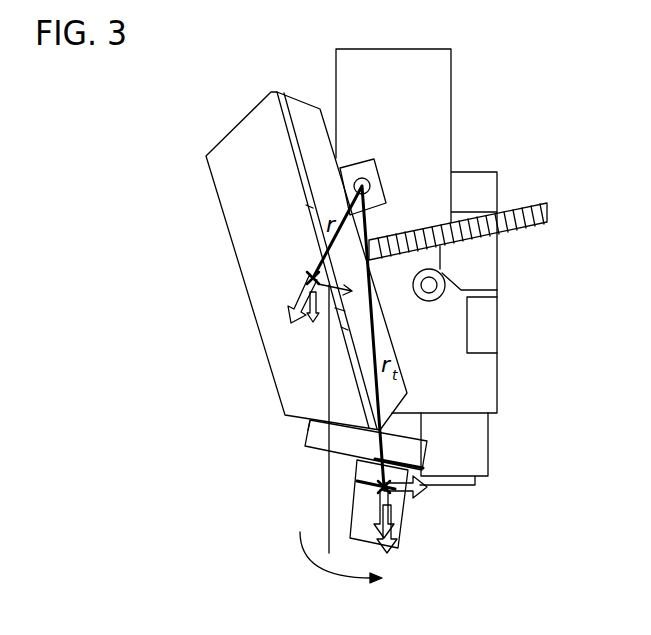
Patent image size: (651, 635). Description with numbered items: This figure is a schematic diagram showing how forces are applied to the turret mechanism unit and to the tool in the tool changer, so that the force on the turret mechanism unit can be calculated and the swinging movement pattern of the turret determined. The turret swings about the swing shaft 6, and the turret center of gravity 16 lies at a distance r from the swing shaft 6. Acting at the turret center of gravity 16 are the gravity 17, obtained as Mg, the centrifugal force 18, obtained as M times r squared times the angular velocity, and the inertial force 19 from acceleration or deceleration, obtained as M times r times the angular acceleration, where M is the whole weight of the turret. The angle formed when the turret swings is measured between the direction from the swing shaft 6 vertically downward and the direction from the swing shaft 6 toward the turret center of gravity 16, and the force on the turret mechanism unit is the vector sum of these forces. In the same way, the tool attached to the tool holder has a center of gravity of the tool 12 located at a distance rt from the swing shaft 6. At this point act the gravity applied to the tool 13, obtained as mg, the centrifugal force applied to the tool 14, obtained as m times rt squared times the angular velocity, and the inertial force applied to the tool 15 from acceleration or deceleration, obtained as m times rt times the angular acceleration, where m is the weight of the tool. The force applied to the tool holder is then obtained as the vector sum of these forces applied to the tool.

The swing shaft 6 is at (368, 181).
The center of gravity of the tool 12 is at (380, 487).
The gravity applied to the tool 13 is at (387, 553).
The centrifugal force applied to the tool 14 is at (385, 492).
The inertial force applied to the tool 15 is at (415, 489).
The turret center of gravity 16 is at (313, 279).
The gravity applied to the turret center of gravity 17 is at (352, 291).
The centrifugal force applied to the turret center of gravity 18 is at (335, 308).
The inertial force applied to the turret center of gravity 19 is at (313, 279).